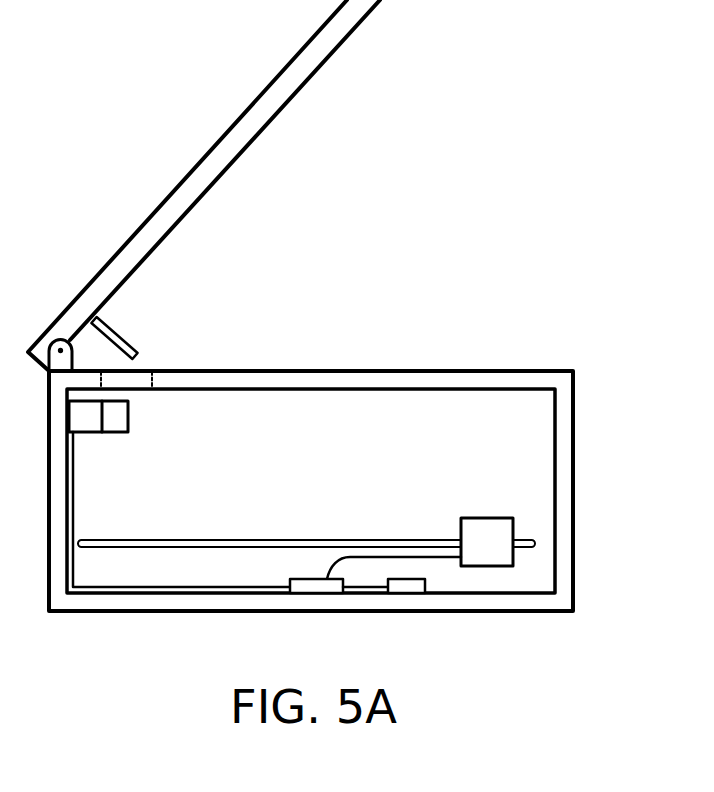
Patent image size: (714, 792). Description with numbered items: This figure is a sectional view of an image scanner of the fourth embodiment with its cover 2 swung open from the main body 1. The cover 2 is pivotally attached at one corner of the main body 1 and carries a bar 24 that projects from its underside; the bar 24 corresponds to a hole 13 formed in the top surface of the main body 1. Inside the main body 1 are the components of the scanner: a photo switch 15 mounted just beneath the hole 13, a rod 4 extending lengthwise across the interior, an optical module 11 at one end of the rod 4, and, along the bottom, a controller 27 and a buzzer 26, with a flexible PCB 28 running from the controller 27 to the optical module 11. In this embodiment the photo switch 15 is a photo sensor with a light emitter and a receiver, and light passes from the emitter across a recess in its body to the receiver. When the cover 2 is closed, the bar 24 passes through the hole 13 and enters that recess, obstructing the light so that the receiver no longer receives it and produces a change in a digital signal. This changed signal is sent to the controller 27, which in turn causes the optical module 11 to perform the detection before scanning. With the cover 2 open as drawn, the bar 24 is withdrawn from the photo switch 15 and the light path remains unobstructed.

The main body 1 is at (573, 503).
The cover 2 is at (201, 160).
The bar 24 is at (131, 341).
The hole 13 is at (135, 388).
The photo switch 15 is at (117, 432).
The rod 4 is at (258, 541).
The optical module 11 is at (492, 527).
The flexible PCB 28 is at (435, 557).
The controller 27 is at (318, 590).
The buzzer 26 is at (407, 590).